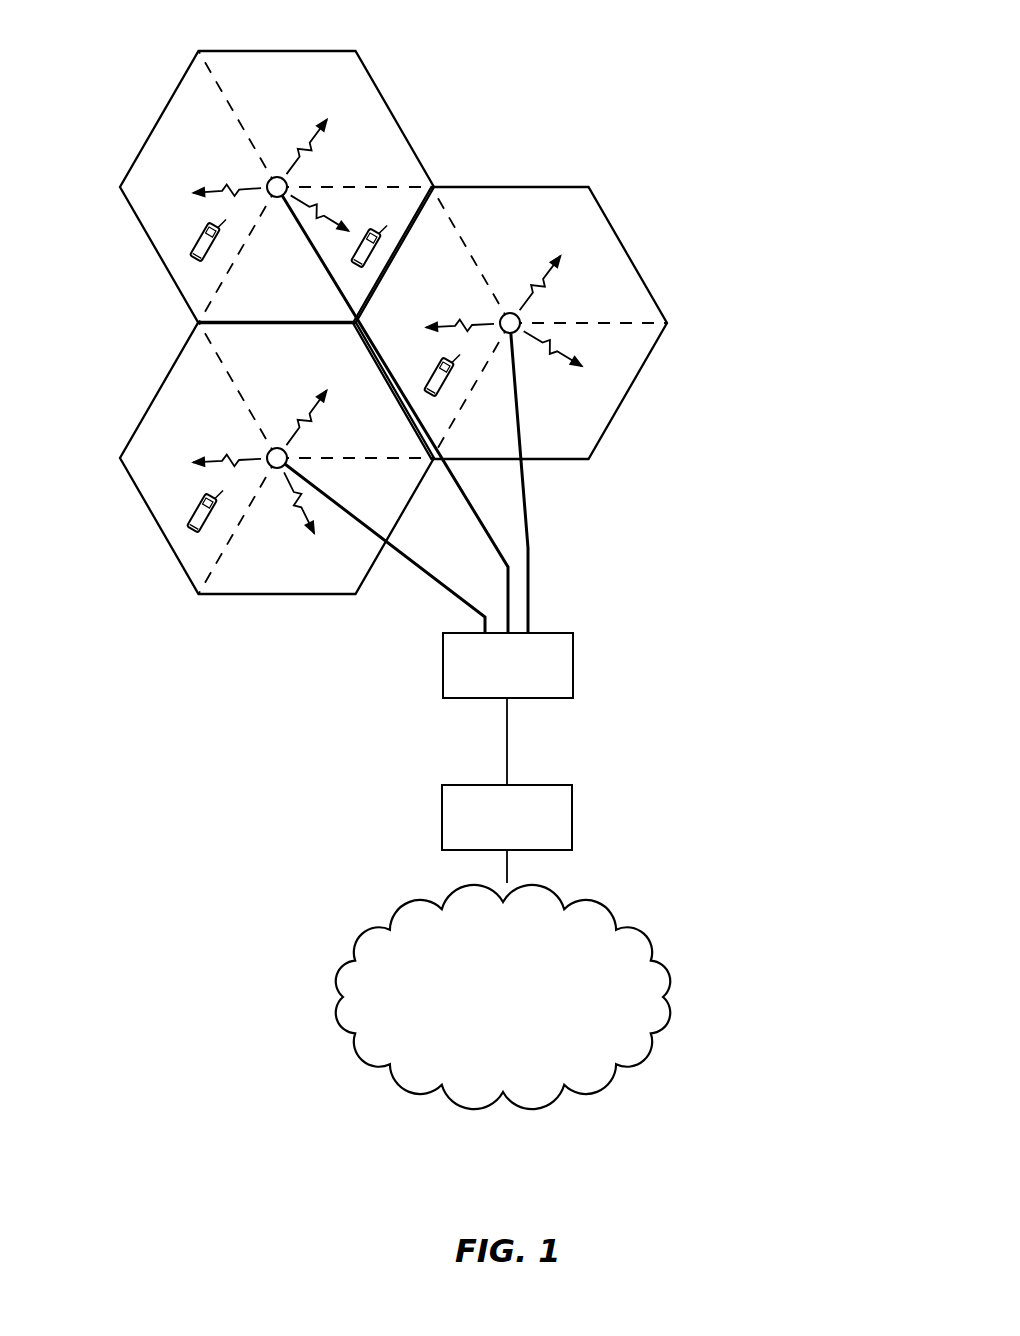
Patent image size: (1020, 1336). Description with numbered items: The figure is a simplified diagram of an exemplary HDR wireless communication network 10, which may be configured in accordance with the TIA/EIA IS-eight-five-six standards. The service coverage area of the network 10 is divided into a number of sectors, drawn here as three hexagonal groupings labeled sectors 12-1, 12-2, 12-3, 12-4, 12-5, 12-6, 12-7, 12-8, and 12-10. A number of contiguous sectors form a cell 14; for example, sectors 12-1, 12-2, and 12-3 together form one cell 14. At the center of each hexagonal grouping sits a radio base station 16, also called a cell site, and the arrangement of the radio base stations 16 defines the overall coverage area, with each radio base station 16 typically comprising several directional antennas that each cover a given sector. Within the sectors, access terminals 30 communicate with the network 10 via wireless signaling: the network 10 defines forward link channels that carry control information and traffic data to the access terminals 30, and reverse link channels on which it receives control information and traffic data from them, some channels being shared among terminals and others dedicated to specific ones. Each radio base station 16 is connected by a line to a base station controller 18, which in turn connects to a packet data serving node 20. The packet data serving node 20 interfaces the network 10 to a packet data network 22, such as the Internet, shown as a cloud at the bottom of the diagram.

The wireless communication network 10 is at (733, 94).
The sector 12-1 is at (319, 307).
The sector 12-2 is at (449, 292).
The sector 12-3 is at (308, 357).
The sector 12-4 is at (214, 429).
The sector 12-5 is at (319, 581).
The sector 12-6 is at (598, 420).
The sector 12-7 is at (544, 224).
The sector 12-8 is at (309, 84).
The sector 12-10 is at (229, 156).
The cell 14 is at (212, 298).
The radio base station 16 is at (289, 181).
The base station controller 18 is at (573, 650).
The packet data serving node 20 is at (572, 804).
The packet data network 22 is at (612, 918).
The access terminal 30 is at (192, 248).